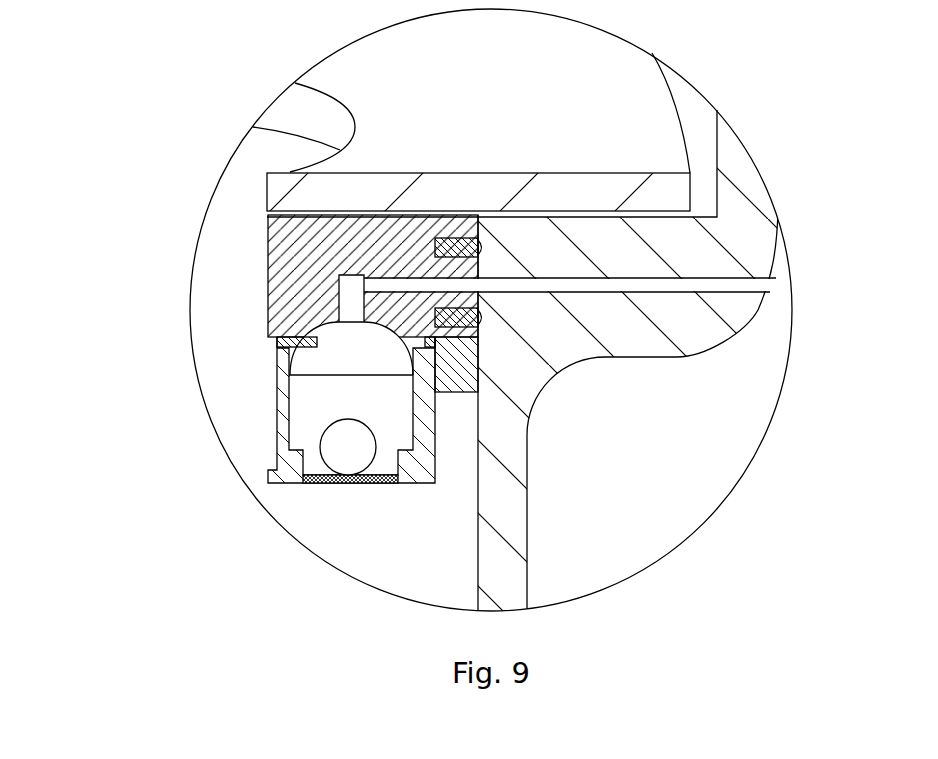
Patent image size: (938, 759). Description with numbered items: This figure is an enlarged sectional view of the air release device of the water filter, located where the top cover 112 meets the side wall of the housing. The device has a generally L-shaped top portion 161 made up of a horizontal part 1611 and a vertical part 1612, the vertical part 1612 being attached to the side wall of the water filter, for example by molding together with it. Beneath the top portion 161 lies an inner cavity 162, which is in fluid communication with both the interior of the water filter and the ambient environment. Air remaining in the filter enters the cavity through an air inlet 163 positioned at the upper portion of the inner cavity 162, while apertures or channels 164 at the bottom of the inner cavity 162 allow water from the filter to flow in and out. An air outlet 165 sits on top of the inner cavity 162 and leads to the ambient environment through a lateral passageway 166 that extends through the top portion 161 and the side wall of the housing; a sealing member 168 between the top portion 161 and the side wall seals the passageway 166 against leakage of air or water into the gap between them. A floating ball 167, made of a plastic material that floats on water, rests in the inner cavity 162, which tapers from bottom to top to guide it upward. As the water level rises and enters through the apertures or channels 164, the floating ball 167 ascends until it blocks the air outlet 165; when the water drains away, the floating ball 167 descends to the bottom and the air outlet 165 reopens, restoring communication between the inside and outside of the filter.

The top cover 112 is at (617, 122).
The top portion 161 is at (447, 322).
The horizontal part 1611 is at (290, 272).
The vertical part 1612 is at (457, 367).
The inner cavity 162 is at (250, 481).
The air inlet 163 is at (317, 347).
The apertures or channels 164 is at (340, 483).
The air outlet 165 is at (348, 288).
The lateral passageway 166 is at (717, 287).
The floating ball 167 is at (345, 449).
The sealing member 168 is at (456, 237).